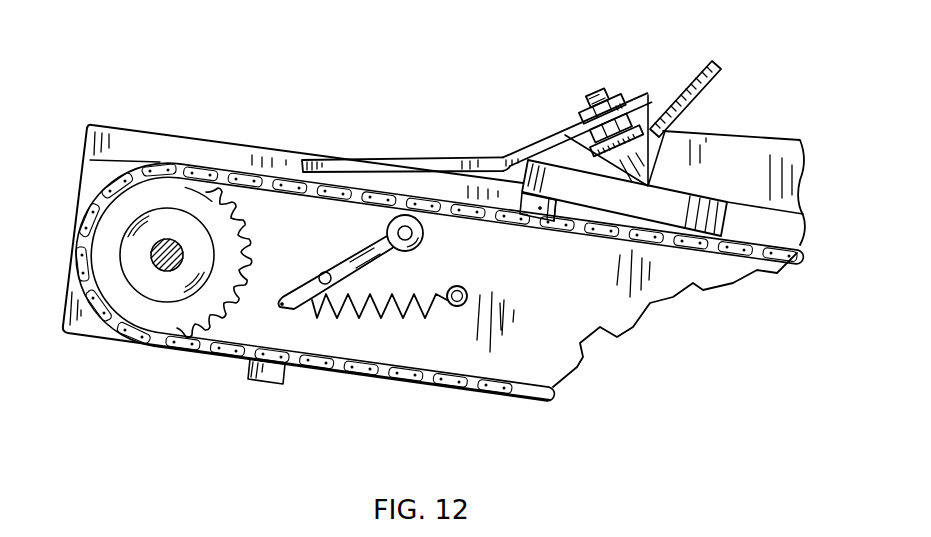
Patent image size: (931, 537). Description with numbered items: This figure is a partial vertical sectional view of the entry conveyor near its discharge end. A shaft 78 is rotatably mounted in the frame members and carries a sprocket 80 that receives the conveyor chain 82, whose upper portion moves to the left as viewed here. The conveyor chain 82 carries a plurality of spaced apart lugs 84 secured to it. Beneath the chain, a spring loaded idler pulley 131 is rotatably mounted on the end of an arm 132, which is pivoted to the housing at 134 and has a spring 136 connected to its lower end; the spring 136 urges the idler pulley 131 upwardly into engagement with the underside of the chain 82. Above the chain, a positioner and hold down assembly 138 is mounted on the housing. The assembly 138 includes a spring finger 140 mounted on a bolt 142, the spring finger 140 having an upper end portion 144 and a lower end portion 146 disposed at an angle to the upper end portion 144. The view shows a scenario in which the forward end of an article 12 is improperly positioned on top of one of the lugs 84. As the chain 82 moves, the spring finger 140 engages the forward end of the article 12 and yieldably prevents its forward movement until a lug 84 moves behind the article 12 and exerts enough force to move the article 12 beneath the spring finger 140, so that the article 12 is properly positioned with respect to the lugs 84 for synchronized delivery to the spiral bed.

The article 12 is at (662, 184).
The shaft 78 is at (158, 272).
The sprocket 80 is at (132, 207).
The conveyor chain 82 is at (532, 222).
The lugs 84 is at (267, 383).
The idler pulley 131 is at (423, 242).
The arm 132 is at (370, 262).
The pivot 134 is at (322, 266).
The spring 136 is at (352, 320).
The positioner and hold down assembly 138 is at (591, 70).
The spring finger 140 is at (511, 110).
The bolt 142 is at (598, 88).
The upper end portion 144 is at (560, 133).
The lower end portion 146 is at (393, 161).